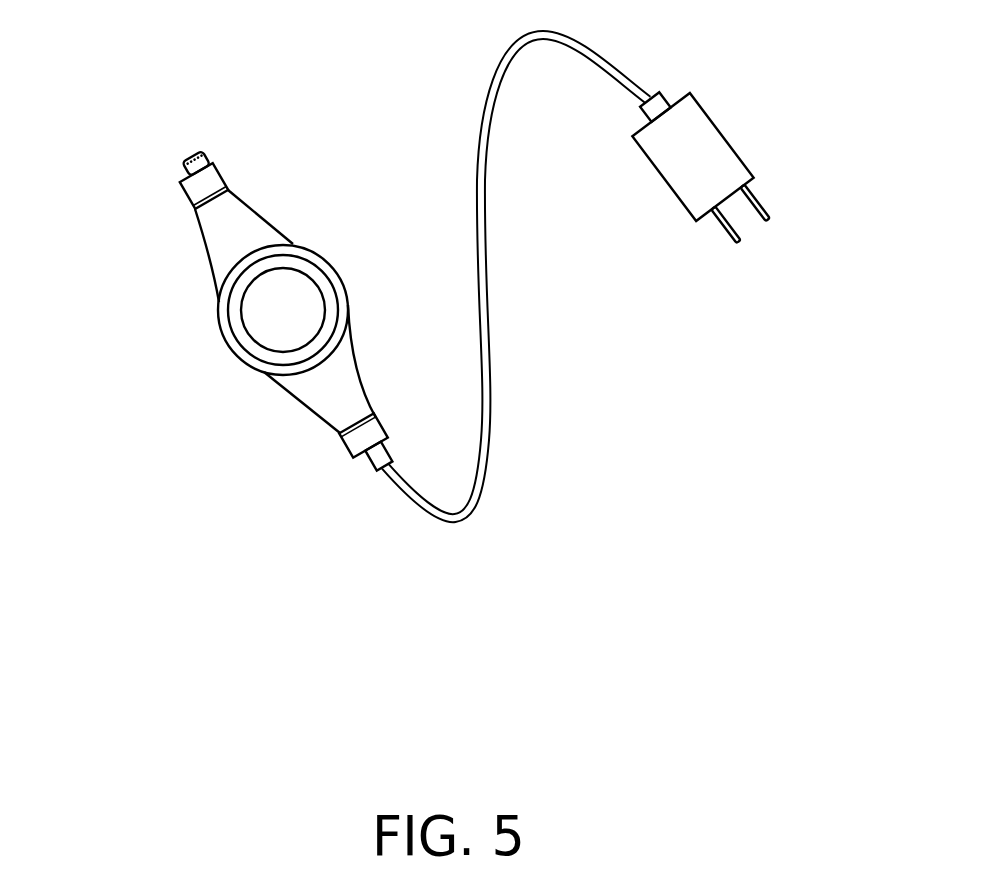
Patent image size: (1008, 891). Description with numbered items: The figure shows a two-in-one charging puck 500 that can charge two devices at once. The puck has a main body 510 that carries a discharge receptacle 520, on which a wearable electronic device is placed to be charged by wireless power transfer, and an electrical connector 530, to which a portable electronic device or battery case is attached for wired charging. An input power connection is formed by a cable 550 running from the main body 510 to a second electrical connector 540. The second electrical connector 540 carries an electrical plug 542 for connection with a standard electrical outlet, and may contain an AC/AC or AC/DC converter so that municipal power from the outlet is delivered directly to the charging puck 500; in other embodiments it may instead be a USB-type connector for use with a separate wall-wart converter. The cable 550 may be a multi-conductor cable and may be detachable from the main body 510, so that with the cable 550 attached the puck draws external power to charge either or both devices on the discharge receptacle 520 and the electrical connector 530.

The 2-in-1 charging puck 500 is at (380, 46).
The main body 510 is at (223, 253).
The discharge receptacle 520 is at (285, 322).
The electrical connector 530 is at (177, 175).
The second electrical connector 540 is at (745, 118).
The electrical plug 542 is at (760, 202).
The cable 550 is at (488, 295).